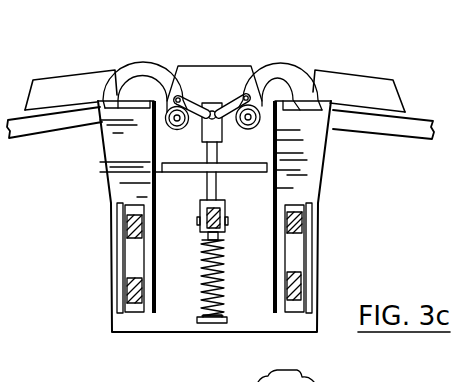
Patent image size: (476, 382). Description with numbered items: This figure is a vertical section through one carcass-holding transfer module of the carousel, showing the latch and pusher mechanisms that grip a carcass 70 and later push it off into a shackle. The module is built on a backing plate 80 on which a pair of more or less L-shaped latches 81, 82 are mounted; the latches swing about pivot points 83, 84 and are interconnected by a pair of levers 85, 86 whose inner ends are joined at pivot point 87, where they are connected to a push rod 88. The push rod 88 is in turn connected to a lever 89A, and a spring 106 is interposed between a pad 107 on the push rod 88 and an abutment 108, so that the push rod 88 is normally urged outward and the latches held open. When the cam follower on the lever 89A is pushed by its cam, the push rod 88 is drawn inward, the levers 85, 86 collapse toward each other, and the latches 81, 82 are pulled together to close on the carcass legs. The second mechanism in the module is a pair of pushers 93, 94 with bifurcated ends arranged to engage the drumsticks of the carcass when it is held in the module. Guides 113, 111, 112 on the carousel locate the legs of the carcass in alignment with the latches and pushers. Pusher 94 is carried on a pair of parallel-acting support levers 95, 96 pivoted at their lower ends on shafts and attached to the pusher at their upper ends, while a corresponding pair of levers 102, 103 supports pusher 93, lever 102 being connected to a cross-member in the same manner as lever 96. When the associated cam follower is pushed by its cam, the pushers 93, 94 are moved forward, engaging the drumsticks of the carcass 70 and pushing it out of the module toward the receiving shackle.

The carcass 70 is at (303, 374).
The backing plate 80 is at (186, 173).
The latch 81 is at (150, 70).
The latch 82 is at (292, 70).
The pivot point 83 is at (172, 120).
The pivot point 84 is at (253, 118).
The lever 85 is at (184, 125).
The lever 86 is at (231, 125).
The pivot point 87 is at (210, 110).
The push rod 88 is at (213, 185).
The lever 89A is at (222, 212).
The pusher 93 is at (112, 162).
The pusher 94 is at (320, 163).
The support lever 95 is at (299, 277).
The support lever 96 is at (302, 217).
The lever 102 is at (126, 230).
The lever 103 is at (128, 292).
The spring 106 is at (224, 287).
The pad 107 is at (223, 238).
The abutment 108 is at (197, 322).
The guide 111 is at (228, 64).
The guide 112 is at (342, 70).
The guide 113 is at (82, 70).